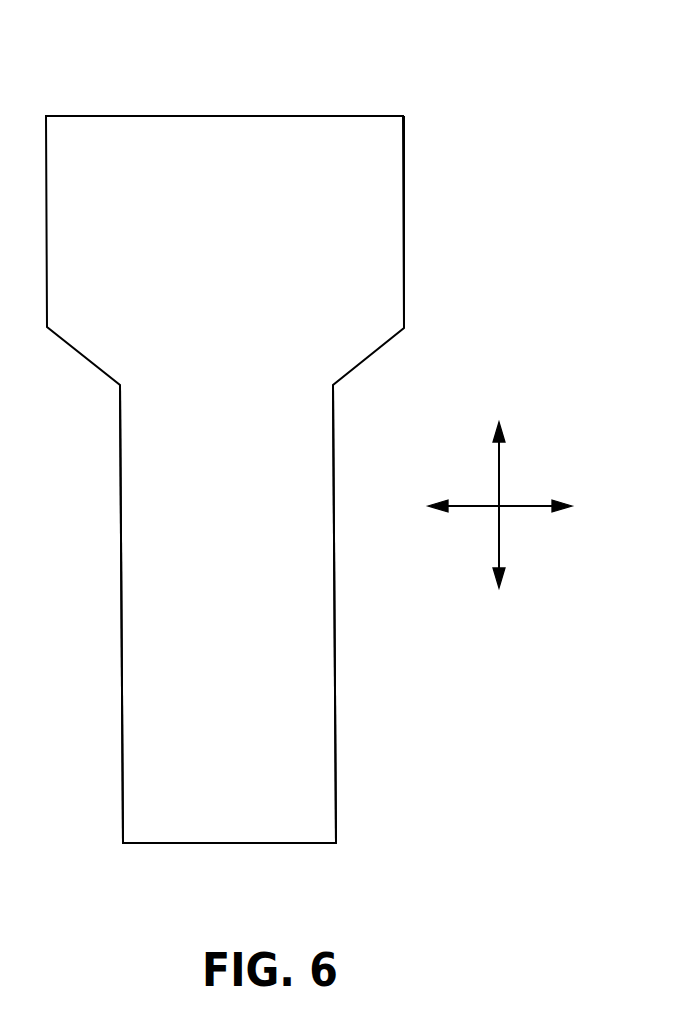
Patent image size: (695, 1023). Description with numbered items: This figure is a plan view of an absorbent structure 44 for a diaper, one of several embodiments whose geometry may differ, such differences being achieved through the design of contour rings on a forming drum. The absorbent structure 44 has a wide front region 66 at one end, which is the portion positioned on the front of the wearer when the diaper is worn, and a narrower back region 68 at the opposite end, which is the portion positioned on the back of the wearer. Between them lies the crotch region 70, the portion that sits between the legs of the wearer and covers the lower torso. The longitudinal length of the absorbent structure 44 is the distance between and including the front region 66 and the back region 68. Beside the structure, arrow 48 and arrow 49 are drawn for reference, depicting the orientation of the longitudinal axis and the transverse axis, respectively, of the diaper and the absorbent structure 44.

The absorbent structure 44 is at (400, 84).
The front region 66 is at (375, 280).
The back region 68 is at (313, 800).
The crotch region 70 is at (140, 540).
The arrow 48 is at (500, 468).
The arrow 49 is at (530, 507).